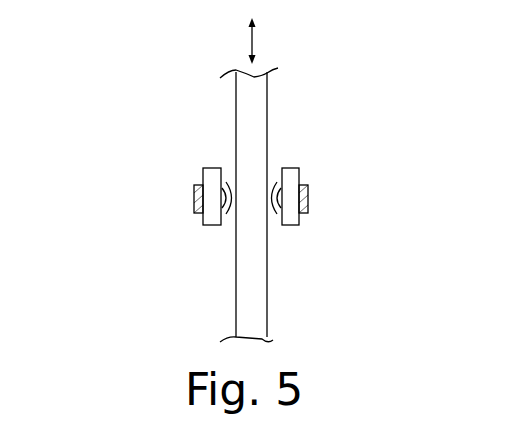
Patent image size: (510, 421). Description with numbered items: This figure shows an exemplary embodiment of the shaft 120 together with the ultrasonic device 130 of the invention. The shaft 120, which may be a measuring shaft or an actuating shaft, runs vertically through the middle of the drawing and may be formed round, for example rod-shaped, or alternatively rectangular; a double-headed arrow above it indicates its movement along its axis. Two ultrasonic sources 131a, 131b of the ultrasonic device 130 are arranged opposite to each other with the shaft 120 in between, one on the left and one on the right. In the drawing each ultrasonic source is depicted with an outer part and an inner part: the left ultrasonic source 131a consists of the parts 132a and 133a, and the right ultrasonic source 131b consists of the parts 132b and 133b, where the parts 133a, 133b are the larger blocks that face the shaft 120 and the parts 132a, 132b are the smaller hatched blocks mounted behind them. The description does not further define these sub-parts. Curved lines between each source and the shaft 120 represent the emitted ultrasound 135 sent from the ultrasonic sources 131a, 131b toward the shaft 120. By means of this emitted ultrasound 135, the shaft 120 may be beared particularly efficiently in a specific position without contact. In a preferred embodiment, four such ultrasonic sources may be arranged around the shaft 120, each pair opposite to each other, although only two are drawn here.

The shaft 120 is at (248, 92).
The ultrasonic device 130 is at (199, 148).
The ultrasonic source 131a is at (137, 187).
The ultrasonic source 131b is at (364, 204).
The first transducer 132a is at (197, 205).
The second transducer 132b is at (305, 202).
The first sensor housing 133a is at (213, 180).
The second sensor housing 133b is at (290, 220).
The emitted ultrasound 135 is at (230, 212).